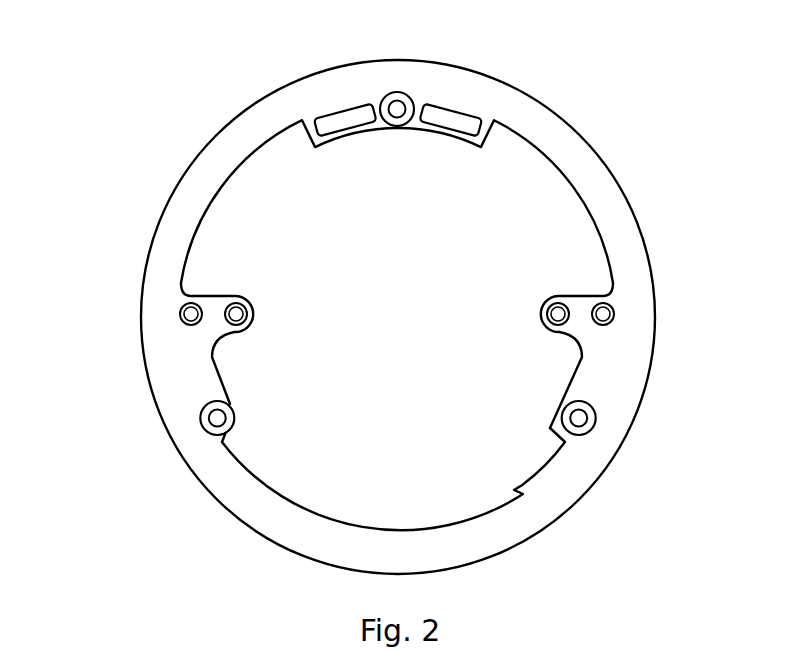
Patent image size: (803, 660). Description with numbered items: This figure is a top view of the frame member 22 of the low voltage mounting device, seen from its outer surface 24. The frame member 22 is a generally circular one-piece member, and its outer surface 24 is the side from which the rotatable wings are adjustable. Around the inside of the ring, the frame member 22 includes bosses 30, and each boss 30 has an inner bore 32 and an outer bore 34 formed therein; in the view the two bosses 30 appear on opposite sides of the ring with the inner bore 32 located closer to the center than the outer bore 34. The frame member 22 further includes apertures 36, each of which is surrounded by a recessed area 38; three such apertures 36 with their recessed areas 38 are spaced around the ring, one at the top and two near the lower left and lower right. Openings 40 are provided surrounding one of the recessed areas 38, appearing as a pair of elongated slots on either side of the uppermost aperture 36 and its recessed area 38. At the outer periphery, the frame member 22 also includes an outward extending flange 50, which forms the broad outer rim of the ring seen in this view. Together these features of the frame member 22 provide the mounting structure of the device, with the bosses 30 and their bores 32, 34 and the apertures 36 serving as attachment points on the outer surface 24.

The frame member 22 is at (132, 156).
The outer surface 24 is at (317, 99).
The boss 30 is at (240, 335).
The inner bore 32 is at (236, 314).
The outer bore 34 is at (191, 314).
The aperture 36 is at (397, 109).
The recessed area 38 is at (410, 101).
The opening 40 is at (333, 124).
The outward extending flange 50 is at (556, 127).